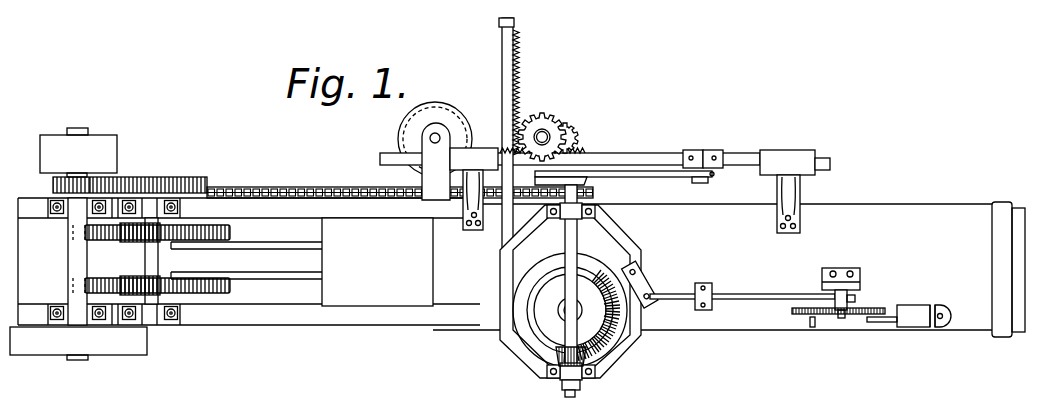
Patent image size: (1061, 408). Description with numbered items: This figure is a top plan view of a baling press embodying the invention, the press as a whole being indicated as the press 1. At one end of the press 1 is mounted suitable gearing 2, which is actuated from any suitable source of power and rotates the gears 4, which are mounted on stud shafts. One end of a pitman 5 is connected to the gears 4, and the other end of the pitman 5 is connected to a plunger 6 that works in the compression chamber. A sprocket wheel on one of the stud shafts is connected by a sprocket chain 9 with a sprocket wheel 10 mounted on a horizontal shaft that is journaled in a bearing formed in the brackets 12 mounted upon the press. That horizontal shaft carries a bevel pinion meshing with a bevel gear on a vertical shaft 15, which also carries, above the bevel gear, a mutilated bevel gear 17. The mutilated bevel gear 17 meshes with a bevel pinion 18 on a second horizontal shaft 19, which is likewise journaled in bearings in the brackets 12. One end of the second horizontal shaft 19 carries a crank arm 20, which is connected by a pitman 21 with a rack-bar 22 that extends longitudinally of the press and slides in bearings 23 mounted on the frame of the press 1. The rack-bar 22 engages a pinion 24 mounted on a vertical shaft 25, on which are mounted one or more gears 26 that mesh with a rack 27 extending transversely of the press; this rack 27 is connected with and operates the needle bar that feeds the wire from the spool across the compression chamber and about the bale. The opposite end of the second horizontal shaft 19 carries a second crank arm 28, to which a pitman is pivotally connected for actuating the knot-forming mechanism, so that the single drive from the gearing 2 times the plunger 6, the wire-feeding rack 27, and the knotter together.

The press 1 is at (352, 318).
The gearing 2 is at (132, 180).
The gears 4 is at (232, 288).
The pitman 5 is at (288, 255).
The plunger 6 is at (400, 290).
The sprocket chain 9 is at (250, 190).
The sprocket wheel 10 is at (590, 196).
The brackets 12 is at (562, 372).
The vertical shaft 15 is at (560, 312).
The mutilated bevel gear 17 is at (617, 337).
The bevel pinion 18 is at (590, 350).
The second horizontal shaft 19 is at (565, 238).
The crank arm 20 is at (623, 185).
The pitman 21 is at (714, 175).
The rack-bar 22 is at (632, 154).
The bearings 23 is at (786, 160).
The pinion 24 is at (575, 150).
The vertical shaft 25 is at (552, 135).
The gears 26 is at (537, 112).
The rack 27 is at (518, 70).
The second crank arm 28 is at (565, 383).